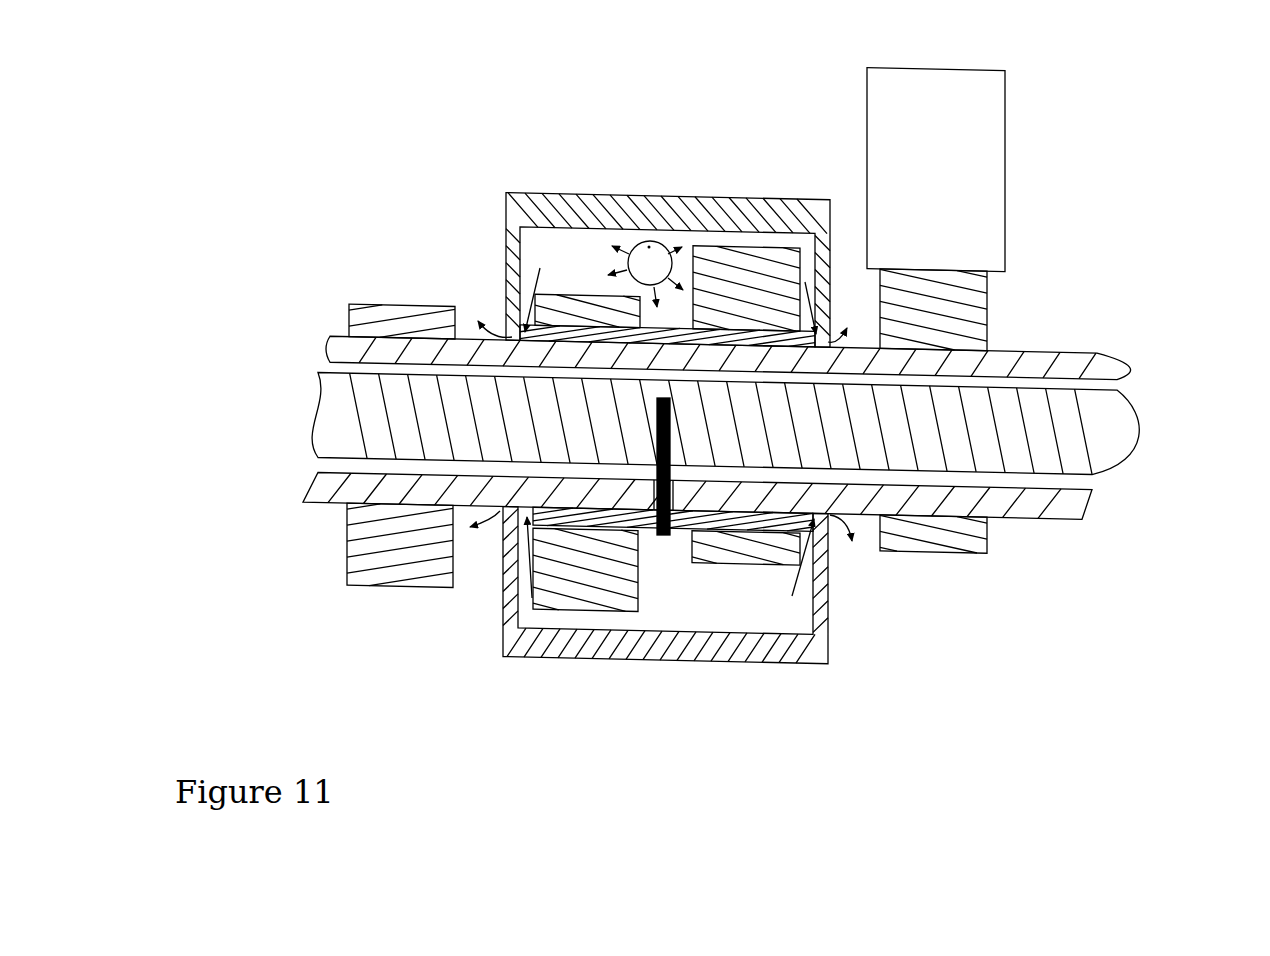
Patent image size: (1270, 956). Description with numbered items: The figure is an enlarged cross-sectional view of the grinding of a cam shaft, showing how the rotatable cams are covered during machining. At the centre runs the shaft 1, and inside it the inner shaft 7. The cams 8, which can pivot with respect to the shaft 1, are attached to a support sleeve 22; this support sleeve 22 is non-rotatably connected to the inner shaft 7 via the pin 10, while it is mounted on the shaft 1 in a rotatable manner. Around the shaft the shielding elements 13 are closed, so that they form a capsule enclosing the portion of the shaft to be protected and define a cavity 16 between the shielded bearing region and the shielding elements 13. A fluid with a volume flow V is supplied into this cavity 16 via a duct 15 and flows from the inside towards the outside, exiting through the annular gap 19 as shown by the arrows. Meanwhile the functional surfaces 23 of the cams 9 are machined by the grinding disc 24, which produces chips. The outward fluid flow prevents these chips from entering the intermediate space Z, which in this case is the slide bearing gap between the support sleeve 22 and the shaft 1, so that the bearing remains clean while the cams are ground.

The shaft 1 is at (1033, 511).
The inner shaft 7 is at (1072, 430).
The cams 8 is at (772, 565).
The cams 9 is at (347, 538).
The pin 10 is at (662, 537).
The shielding elements 13 is at (662, 212).
The duct 15 is at (658, 258).
The cavity 16 is at (594, 250).
The annular gap 19 is at (822, 340).
The support sleeve 22 is at (662, 527).
The functional surfaces 23 is at (378, 305).
The grinding disc 24 is at (924, 151).
The intermediate space Z is at (840, 338).